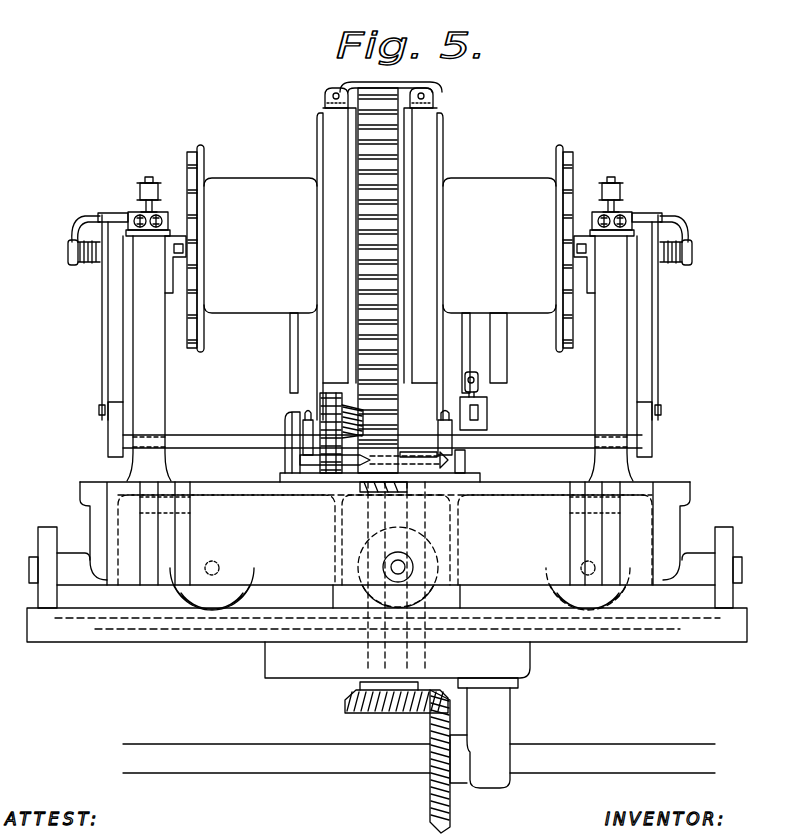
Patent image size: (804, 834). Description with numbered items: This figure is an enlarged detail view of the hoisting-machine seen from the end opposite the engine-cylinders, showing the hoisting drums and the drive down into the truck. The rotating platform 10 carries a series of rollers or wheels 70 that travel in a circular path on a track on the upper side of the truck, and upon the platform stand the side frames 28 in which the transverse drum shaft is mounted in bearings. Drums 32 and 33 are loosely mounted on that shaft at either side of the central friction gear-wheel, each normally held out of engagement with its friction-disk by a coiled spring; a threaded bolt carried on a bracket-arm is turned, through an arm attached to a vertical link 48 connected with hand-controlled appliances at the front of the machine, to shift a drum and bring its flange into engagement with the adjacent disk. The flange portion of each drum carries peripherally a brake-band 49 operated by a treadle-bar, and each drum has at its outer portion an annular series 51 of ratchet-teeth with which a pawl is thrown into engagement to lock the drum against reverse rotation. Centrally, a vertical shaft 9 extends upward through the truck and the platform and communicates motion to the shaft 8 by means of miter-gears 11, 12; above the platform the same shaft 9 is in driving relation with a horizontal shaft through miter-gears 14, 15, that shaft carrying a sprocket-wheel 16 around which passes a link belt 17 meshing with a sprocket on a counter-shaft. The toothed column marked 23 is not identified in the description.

The shaft 8 is at (563, 765).
The vertical shaft 9 is at (370, 683).
The rotating platform 10 is at (387, 580).
The miter-gear 11 is at (355, 712).
The miter-gear 12 is at (432, 797).
The miter-gear 14 is at (348, 400).
The miter-gear 15 is at (350, 465).
The sprocket-wheel 16 is at (320, 403).
The link belt 17 is at (318, 396).
The gear stack / column 23 is at (378, 234).
The side frames 28 is at (380, 329).
The drum 32 is at (260, 285).
The drum 33 is at (499, 285).
The vertical link 48 is at (105, 358).
The brake-band 49 is at (345, 208).
The annular series of ratchet-teeth 51 is at (196, 146).
The rollers or wheels 70 is at (218, 600).